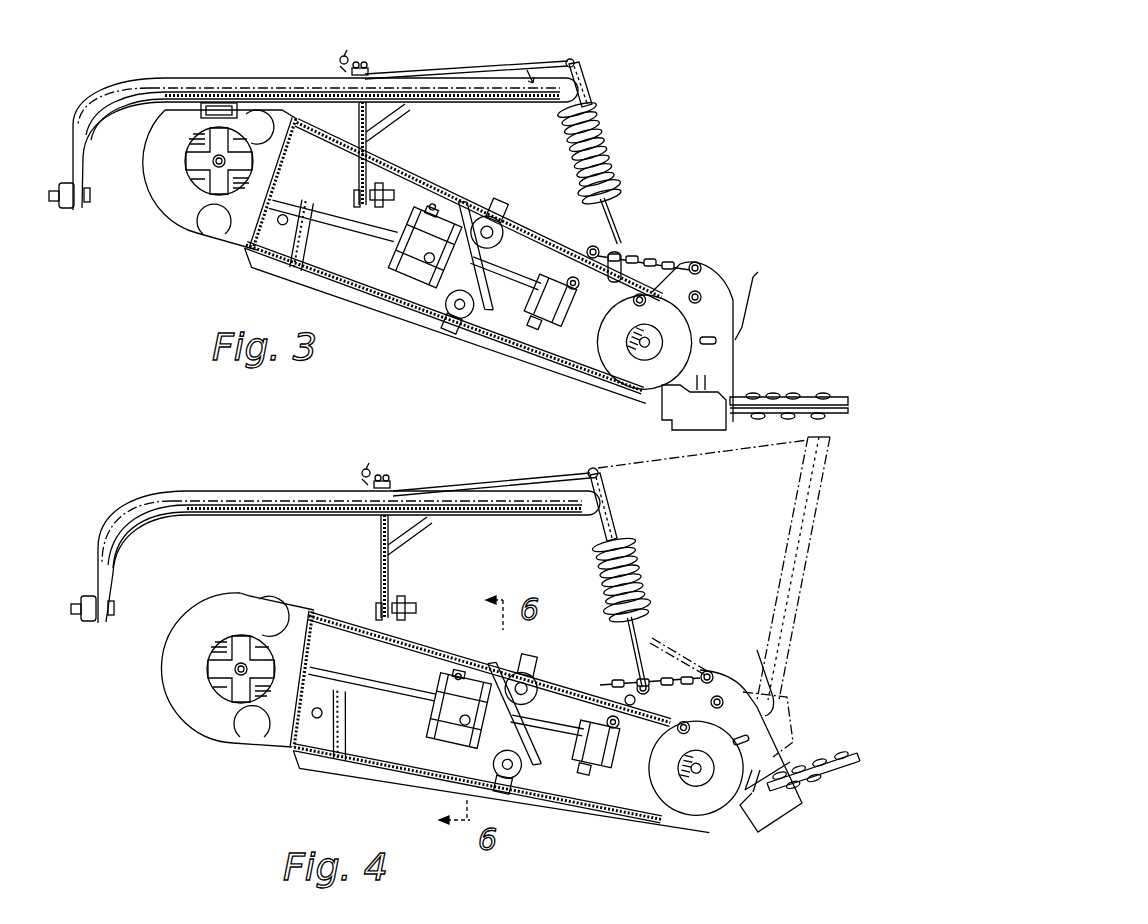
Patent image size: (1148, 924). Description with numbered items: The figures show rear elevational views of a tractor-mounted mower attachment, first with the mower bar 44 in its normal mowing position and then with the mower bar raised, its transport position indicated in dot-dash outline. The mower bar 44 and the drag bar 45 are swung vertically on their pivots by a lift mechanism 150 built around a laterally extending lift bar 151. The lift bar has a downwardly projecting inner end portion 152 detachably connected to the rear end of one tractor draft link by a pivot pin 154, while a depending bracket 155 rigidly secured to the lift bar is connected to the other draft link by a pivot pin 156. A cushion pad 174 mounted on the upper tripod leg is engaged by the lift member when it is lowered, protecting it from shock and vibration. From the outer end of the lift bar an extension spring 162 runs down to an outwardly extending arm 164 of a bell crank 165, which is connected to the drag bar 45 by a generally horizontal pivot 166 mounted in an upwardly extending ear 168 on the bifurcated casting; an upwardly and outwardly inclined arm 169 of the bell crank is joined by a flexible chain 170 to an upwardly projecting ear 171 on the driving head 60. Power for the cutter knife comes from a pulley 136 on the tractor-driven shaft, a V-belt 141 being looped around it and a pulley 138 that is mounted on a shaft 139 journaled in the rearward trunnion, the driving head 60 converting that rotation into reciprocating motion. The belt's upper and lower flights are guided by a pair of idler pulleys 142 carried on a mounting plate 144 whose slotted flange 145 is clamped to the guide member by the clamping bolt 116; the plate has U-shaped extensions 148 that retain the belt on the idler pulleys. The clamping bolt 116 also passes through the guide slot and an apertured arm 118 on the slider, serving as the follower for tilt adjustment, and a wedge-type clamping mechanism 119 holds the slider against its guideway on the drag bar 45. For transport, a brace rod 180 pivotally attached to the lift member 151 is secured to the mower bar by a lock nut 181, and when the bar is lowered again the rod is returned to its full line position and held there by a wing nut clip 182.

In FIG. 3, the mower bar 44 is at (793, 396).
In FIG. 4, the mower bar 44 is at (842, 765).
In FIG. 3, the drag bar 45 is at (327, 215).
In FIG. 4, the drag bar 45 is at (350, 688).
In FIG. 3, the driving head 60 is at (727, 353).
In FIG. 4, the driving head 60 is at (780, 763).
In FIG. 3, the clamping bolt 116 is at (482, 270).
In FIG. 4, the clamping bolt 116 is at (513, 722).
In FIG. 3, the arm 118 is at (456, 215).
In FIG. 4, the arm 118 is at (521, 688).
In FIG. 3, the clamping mechanism 119 is at (396, 257).
In FIG. 4, the clamping mechanism 119 is at (434, 681).
In FIG. 3, the pulley 136 is at (213, 190).
In FIG. 4, the pulley 136 is at (203, 672).
In FIG. 3, the pulley 138 is at (683, 330).
In FIG. 4, the pulley 138 is at (690, 800).
In FIG. 3, the shaft 139 is at (640, 353).
In FIG. 3, the V-belt 141 is at (517, 355).
In FIG. 4, the V-belt 141 is at (450, 645).
In FIG. 3, the idler pulleys 142 is at (512, 228).
In FIG. 4, the idler pulleys 142 is at (537, 667).
In FIG. 3, the mounting plate 144 is at (477, 280).
In FIG. 4, the mounting plate 144 is at (513, 748).
In FIG. 3, the slotted flange 145 is at (437, 280).
In FIG. 4, the slotted flange 145 is at (480, 748).
In FIG. 3, the U-shaped extensions 148 is at (497, 207).
In FIG. 4, the U-shaped extensions 148 is at (515, 724).
In FIG. 3, the lift mechanism 150 is at (545, 66).
In FIG. 4, the lift mechanism 150 is at (602, 504).
In FIG. 3, the lift bar 151 is at (293, 78).
In FIG. 4, the lift bar 151 is at (257, 508).
In FIG. 3, the inner end portion 152 is at (85, 153).
In FIG. 4, the inner end portion 152 is at (120, 550).
In FIG. 3, the pivot pin 154 is at (86, 203).
In FIG. 4, the pivot pin 154 is at (113, 609).
In FIG. 3, the bracket 155 is at (390, 133).
In FIG. 4, the bracket 155 is at (390, 575).
In FIG. 3, the pivot pin 156 is at (393, 192).
In FIG. 4, the pivot pin 156 is at (417, 607).
In FIG. 3, the extension spring 162 is at (608, 152).
In FIG. 4, the extension spring 162 is at (633, 573).
In FIG. 3, the arm 164 is at (603, 297).
In FIG. 4, the arm 164 is at (650, 690).
In FIG. 3, the bell crank 165 is at (580, 250).
In FIG. 4, the bell crank 165 is at (597, 703).
In FIG. 3, the pivot 166 is at (566, 282).
In FIG. 4, the pivot 166 is at (645, 722).
In FIG. 3, the ear 168 is at (530, 318).
In FIG. 4, the ear 168 is at (584, 769).
In FIG. 3, the arm 169 is at (612, 250).
In FIG. 4, the arm 169 is at (630, 700).
In FIG. 3, the chain 170 is at (660, 252).
In FIG. 4, the chain 170 is at (672, 663).
In FIG. 3, the ear 171 is at (697, 263).
In FIG. 4, the ear 171 is at (707, 677).
In FIG. 3, the cushion pad 174 is at (218, 103).
In FIG. 3, the brace rod 180 is at (488, 62).
In FIG. 4, the brace rod 180 is at (530, 476).
In FIG. 3, the lock nut 181 is at (346, 58).
In FIG. 4, the lock nut 181 is at (357, 473).
In FIG. 3, the wing nut clip 182 is at (366, 68).
In FIG. 4, the wing nut clip 182 is at (390, 474).